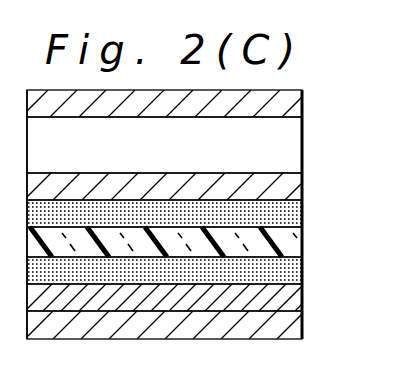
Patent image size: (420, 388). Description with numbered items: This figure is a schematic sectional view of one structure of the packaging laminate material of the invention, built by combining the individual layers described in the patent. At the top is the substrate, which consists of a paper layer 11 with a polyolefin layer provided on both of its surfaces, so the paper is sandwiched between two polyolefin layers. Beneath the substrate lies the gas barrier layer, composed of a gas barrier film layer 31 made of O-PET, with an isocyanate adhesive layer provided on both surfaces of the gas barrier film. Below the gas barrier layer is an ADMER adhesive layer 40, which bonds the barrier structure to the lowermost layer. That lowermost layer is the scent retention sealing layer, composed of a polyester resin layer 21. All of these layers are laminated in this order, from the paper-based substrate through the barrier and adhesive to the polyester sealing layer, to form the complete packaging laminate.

The paper layer 11 is at (305, 143).
The gas barrier film layer 31 is at (305, 242).
The adhesive layer 40 is at (305, 297).
The polyester resin layer 21 is at (305, 325).